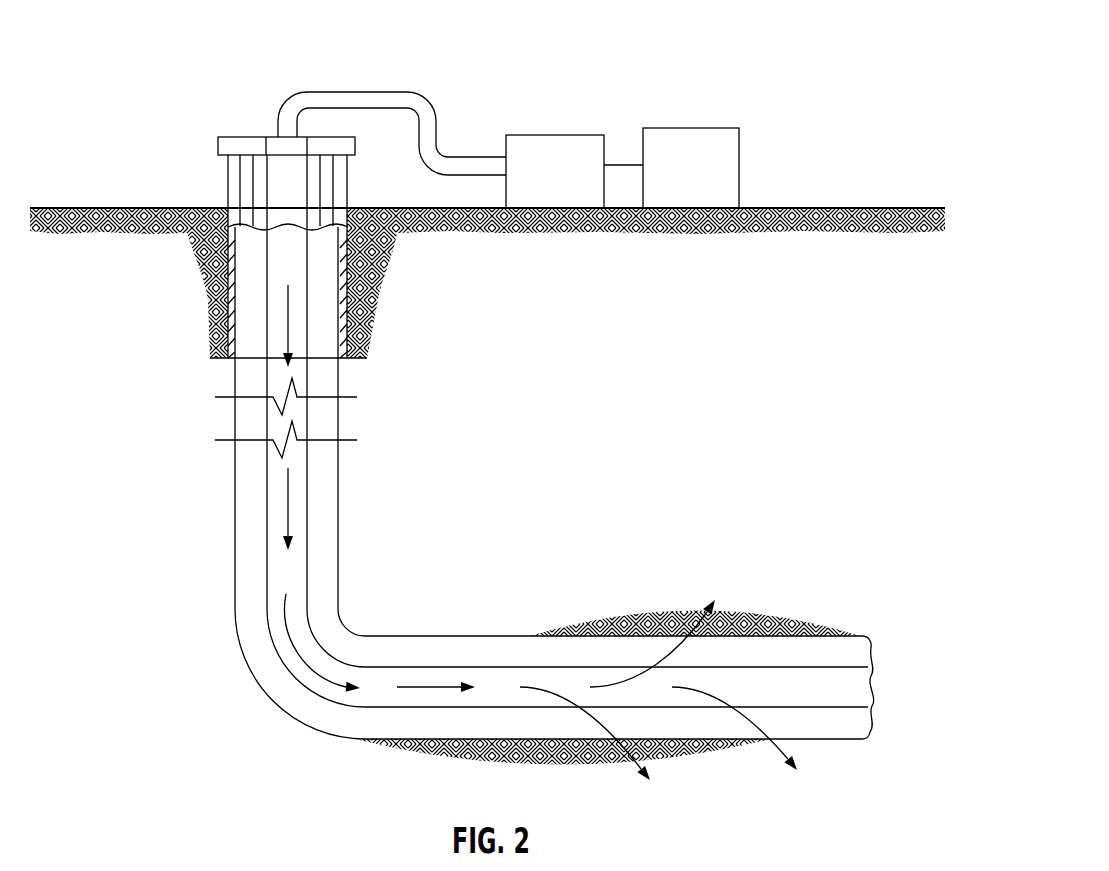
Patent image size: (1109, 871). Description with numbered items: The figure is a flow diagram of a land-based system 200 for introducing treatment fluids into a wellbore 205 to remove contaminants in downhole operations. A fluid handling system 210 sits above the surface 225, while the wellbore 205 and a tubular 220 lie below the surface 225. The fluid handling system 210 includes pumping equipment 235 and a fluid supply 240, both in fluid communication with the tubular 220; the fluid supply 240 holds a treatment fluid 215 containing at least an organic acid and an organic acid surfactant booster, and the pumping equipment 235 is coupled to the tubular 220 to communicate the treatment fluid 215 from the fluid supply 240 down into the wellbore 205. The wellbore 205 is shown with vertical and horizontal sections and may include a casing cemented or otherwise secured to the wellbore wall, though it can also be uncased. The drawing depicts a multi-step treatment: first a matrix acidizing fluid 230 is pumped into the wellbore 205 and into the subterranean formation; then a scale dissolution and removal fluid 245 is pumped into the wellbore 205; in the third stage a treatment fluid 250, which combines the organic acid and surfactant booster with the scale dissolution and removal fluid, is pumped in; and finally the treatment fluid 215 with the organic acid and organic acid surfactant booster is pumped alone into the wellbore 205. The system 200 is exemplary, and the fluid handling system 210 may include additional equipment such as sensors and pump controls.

The land-based system 200 is at (117, 40).
The wellbore 205 is at (235, 470).
The fluid handling system 210 is at (510, 111).
The treatment fluid 215 is at (290, 338).
The tubular 220 is at (265, 288).
The surface 225 is at (792, 208).
The matrix acidizing fluid 230 is at (562, 692).
The pumping equipment 235 is at (555, 135).
The fluid supply 240 is at (700, 128).
The scale dissolution and removal fluid 245 is at (415, 687).
The treatment fluid 250 is at (302, 647).